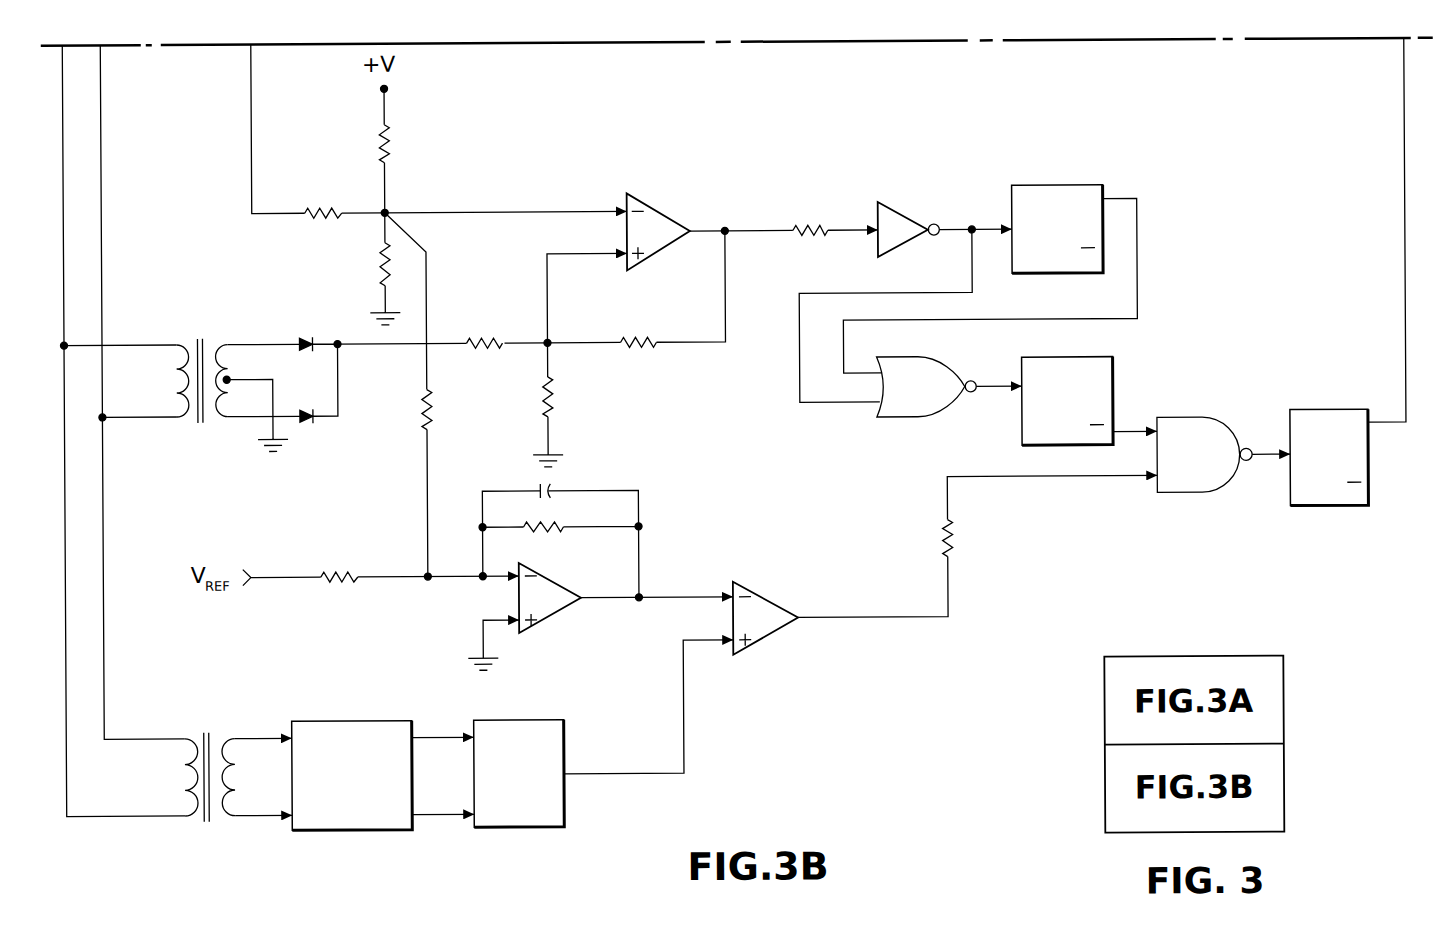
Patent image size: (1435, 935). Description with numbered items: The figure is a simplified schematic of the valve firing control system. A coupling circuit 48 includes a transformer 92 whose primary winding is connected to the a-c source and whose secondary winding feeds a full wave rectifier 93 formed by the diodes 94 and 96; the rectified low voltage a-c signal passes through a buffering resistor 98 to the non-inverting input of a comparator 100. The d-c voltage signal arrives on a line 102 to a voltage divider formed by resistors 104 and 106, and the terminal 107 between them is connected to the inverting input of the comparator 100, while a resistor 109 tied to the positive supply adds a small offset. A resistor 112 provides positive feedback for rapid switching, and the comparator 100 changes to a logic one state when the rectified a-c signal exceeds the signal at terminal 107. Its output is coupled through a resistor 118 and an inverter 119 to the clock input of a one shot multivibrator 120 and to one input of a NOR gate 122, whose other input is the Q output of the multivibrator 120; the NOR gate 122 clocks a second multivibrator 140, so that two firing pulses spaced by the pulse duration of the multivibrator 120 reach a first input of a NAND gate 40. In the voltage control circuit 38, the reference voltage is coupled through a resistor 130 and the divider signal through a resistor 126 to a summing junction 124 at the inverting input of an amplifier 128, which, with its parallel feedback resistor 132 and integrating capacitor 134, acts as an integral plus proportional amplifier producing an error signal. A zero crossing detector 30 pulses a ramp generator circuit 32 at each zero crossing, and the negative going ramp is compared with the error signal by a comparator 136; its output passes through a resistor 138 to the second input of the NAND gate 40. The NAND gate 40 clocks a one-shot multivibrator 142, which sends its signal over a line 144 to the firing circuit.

The zero crossing detector 30 is at (350, 720).
The ramp generator circuit 32 is at (565, 740).
The voltage control circuit 38 is at (470, 544).
The NAND gate 40 is at (1215, 417).
The coupling circuit 48 is at (217, 315).
The transformer 92 is at (198, 342).
The full wave rectifier 93 is at (318, 386).
The diode 94 is at (305, 337).
The diode 96 is at (308, 422).
The buffering resistor 98 is at (497, 330).
The comparator 100 is at (660, 203).
The line 102 is at (250, 88).
The resistor 104 is at (330, 205).
The resistor 106 is at (378, 265).
The terminal 107 is at (400, 205).
The resistor 109 is at (393, 140).
The resistor 112 is at (647, 337).
The resistor 118 is at (800, 217).
The inverter 119 is at (902, 208).
The one shot multivibrator 120 is at (1058, 183).
The NOR gate 122 is at (930, 418).
The summing junction 124 is at (431, 582).
The resistor 126 is at (424, 408).
The amplifier 128 is at (557, 612).
The resistor 130 is at (345, 563).
The feedback resistor 132 is at (553, 542).
The integrating capacitor 134 is at (548, 497).
The comparator 136 is at (777, 597).
The resistor 138 is at (937, 545).
The monostable multivibrator 140 is at (1113, 368).
The one-shot multivibrator 142 is at (1338, 408).
The line 144 is at (1405, 141).